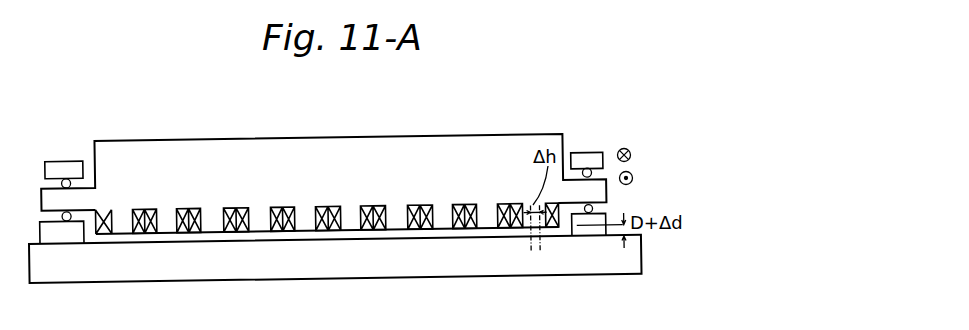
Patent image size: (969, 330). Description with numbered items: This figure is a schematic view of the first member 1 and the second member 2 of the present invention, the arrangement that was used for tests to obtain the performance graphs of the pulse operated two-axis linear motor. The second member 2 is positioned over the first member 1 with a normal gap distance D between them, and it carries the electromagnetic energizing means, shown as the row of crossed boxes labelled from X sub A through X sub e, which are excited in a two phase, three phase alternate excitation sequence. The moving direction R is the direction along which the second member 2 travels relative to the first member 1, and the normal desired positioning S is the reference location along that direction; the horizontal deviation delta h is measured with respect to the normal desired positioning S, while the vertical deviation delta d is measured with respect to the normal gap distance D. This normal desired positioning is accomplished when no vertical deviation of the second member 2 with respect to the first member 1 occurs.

The first member 1 is at (384, 266).
The second member 2 is at (412, 137).
The normal desired positioning S is at (538, 238).
The moving direction R is at (634, 167).